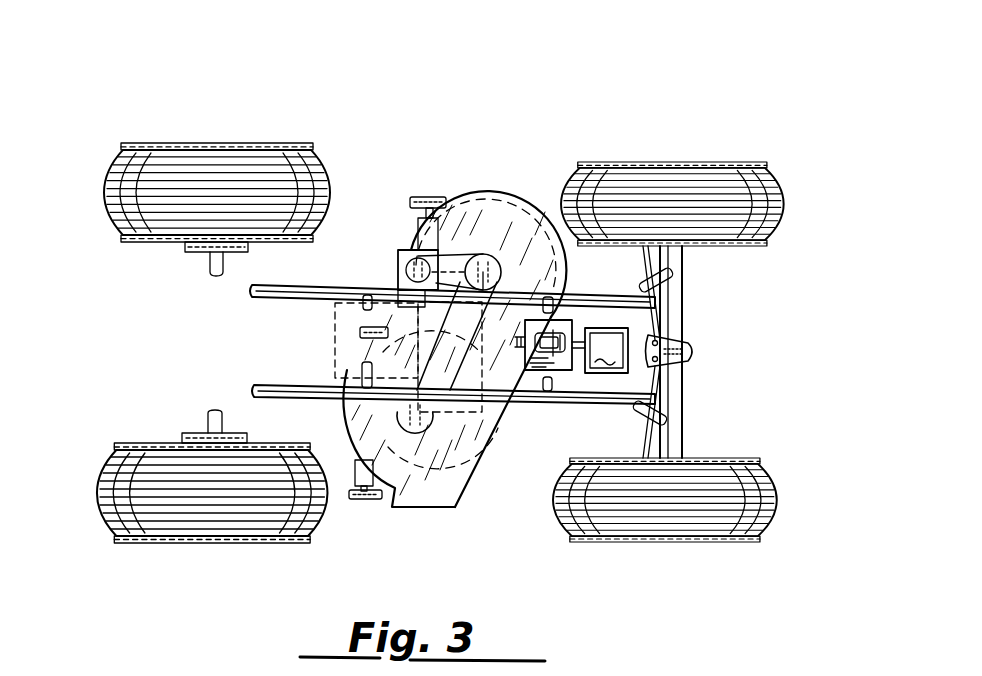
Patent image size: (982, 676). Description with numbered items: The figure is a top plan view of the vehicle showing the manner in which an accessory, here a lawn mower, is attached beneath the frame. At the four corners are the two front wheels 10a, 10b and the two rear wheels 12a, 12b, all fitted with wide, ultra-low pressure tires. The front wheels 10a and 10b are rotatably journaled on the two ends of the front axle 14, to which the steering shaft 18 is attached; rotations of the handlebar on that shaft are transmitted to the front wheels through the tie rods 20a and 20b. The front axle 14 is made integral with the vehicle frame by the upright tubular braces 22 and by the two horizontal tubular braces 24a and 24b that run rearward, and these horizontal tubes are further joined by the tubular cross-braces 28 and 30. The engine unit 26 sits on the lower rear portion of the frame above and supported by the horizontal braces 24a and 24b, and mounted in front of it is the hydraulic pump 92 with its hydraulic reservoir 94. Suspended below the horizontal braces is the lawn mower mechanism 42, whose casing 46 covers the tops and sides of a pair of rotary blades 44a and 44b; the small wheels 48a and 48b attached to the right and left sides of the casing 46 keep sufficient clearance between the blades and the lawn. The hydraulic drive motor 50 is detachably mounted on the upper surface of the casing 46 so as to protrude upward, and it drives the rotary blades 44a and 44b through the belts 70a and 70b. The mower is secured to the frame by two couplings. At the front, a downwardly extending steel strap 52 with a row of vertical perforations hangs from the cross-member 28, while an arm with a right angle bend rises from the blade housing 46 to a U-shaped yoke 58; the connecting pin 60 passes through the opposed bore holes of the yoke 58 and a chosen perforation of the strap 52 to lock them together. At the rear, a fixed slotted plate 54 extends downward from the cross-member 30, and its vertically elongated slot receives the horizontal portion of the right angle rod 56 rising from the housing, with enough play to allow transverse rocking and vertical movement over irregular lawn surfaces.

The front wheel 10a is at (712, 160).
The front wheel 10b is at (710, 542).
The rear wheel 12a is at (162, 143).
The rear wheel 12b is at (146, 542).
The front axle 14 is at (683, 320).
The steering shaft 18 is at (682, 362).
The tie rod 20a is at (657, 262).
The tie rod 20b is at (657, 440).
The upright tubular braces 22 is at (663, 280).
The horizontal tubular brace 24a is at (250, 295).
The horizontal tubular brace 24b is at (256, 386).
The engine unit 26 is at (332, 365).
The tubular cross-brace 28 is at (548, 384).
The tubular cross-brace 30 is at (378, 352).
The lawn mower mechanism 42 is at (455, 318).
The rotary blade 44a is at (523, 212).
The rotary blade 44b is at (440, 464).
The casing 46 is at (482, 458).
The small wheel 48a is at (427, 196).
The small wheel 48b is at (362, 500).
The hydraulic drive motor 50 is at (398, 256).
The steel strap 52 is at (577, 330).
The slotted plate 54 is at (378, 326).
The right angle rod 56 is at (360, 333).
The U-shaped yoke 58 is at (572, 368).
The connecting pin 60 is at (555, 328).
The belt 70a is at (458, 252).
The belt 70b is at (433, 332).
The hydraulic pump 92 is at (565, 372).
The hydraulic reservoir 94 is at (606, 350).